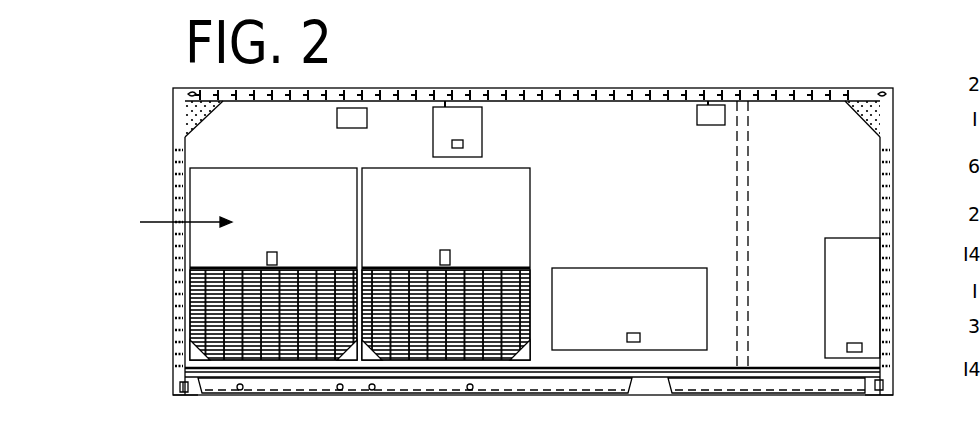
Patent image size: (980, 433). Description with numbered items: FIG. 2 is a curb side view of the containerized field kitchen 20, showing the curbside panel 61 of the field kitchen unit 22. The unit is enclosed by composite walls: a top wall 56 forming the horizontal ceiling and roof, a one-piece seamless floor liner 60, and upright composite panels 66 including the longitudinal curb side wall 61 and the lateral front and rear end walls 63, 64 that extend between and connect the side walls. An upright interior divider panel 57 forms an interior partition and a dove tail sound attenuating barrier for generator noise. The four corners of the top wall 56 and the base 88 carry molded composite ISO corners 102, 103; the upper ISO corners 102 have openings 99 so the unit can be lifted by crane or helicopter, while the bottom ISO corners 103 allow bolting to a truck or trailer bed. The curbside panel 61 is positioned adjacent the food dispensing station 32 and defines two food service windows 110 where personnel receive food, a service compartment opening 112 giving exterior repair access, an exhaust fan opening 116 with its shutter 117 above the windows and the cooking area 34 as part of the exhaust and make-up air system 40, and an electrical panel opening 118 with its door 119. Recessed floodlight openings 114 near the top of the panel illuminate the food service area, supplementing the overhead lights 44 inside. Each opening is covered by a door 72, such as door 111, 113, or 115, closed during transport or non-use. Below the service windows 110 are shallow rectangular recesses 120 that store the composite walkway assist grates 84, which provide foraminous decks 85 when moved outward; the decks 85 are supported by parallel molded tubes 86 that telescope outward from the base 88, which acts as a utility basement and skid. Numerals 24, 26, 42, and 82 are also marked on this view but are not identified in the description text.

The containerized field kitchen 20 is at (173, 90).
The field kitchen unit 22 is at (173, 150).
The rear wall 24 is at (893, 215).
The rear wall insulation 26 is at (862, 222).
The food dispensing station 32 is at (532, 213).
The cooking area 34 is at (657, 368).
The exhaust and make-up air system 40 is at (445, 101).
The temperature sensor 42 is at (697, 118).
The overhead lights 44 is at (337, 118).
The top wall 56 is at (593, 89).
The interior divider panel 57 is at (752, 218).
The floor liner 60 is at (212, 290).
The curb side wall 61 is at (860, 192).
The front end wall 63 is at (893, 345).
The rear end wall 64 is at (185, 196).
The composite panels 66 is at (857, 162).
The door 72 is at (170, 225).
The air outlet 82 is at (220, 308).
The walkway assist grates 84 is at (428, 345).
The decks 85 is at (513, 266).
The tubes 86 is at (248, 393).
The base 88 is at (570, 393).
The openings 99 is at (893, 96).
The upper ISO corners 102 is at (855, 95).
The bottom ISO corners 103 is at (178, 389).
The food service windows 110 is at (393, 168).
The door 111 is at (505, 188).
The service compartment opening 112 is at (628, 268).
The door 113 is at (690, 298).
The floodlight openings 114 is at (708, 101).
The door 115 is at (352, 108).
The exhaust fan opening 116 is at (482, 133).
The shutter 117 is at (460, 128).
The electrical panel opening 118 is at (825, 336).
The door 119 is at (865, 310).
The recesses 120 is at (192, 357).